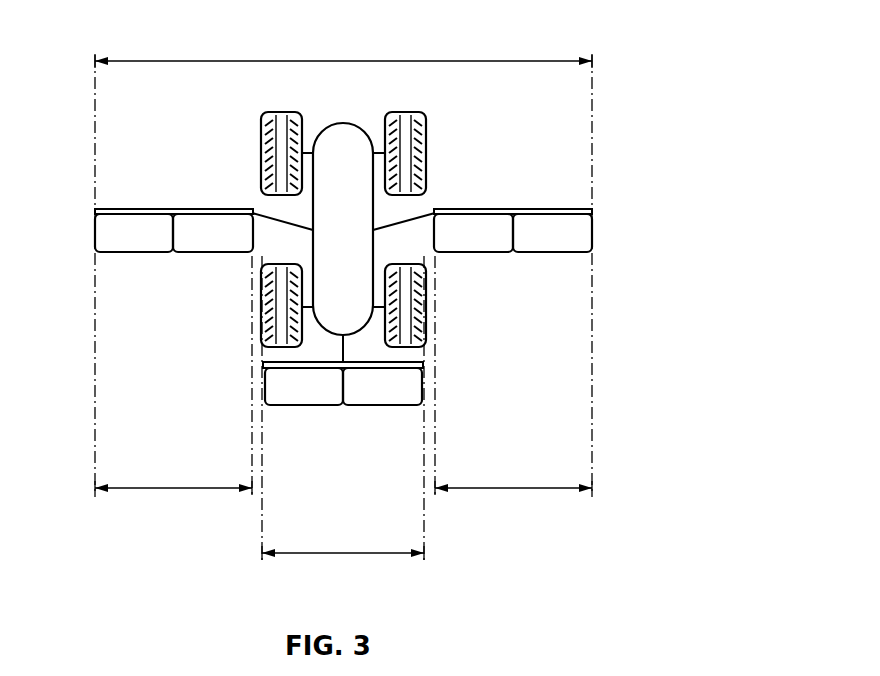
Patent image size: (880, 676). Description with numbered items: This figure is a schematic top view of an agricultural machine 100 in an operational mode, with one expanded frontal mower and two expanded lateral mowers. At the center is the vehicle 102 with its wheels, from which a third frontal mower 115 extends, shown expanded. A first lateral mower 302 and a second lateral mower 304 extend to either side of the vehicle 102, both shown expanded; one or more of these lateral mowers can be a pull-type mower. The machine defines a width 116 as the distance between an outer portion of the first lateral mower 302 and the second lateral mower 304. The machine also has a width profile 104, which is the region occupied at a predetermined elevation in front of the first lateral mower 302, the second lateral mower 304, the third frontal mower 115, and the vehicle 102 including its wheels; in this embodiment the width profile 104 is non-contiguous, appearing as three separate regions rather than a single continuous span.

The agricultural machine 100 is at (372, 248).
The vehicle 102 is at (338, 122).
The width profile 104 is at (175, 503).
The third frontal mower 115 is at (333, 428).
The width 116 is at (472, 61).
The first lateral mower 302 is at (171, 272).
The second lateral mower 304 is at (608, 230).